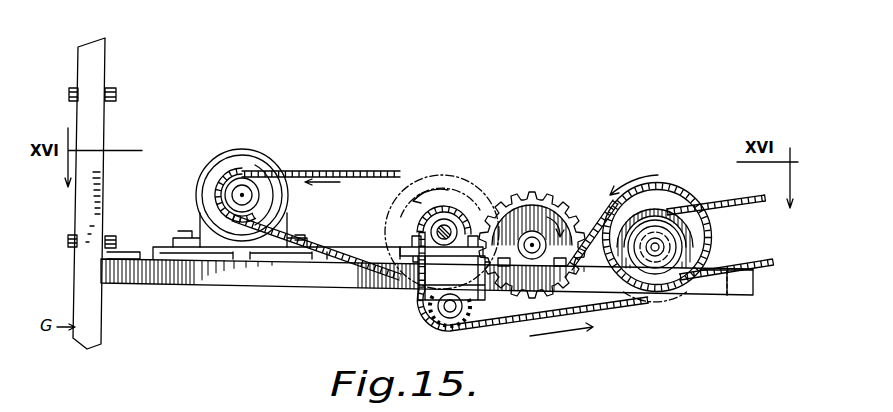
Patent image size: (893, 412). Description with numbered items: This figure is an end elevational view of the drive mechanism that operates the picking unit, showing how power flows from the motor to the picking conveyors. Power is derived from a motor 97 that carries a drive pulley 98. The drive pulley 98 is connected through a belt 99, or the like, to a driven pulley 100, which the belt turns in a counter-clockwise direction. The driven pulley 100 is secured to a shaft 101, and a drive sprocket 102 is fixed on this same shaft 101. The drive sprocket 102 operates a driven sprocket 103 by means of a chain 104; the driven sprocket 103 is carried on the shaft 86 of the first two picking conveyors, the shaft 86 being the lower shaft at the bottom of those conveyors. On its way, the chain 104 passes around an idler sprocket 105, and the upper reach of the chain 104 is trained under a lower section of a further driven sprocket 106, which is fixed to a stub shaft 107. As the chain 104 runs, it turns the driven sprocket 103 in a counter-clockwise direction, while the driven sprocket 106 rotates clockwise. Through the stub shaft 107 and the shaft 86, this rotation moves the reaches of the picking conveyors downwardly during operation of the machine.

The shaft 86 is at (660, 246).
The motor 97 is at (243, 153).
The drive pulley 98 is at (234, 192).
The belt 99 is at (347, 173).
The driven pulley 100 is at (445, 172).
The shaft 101 is at (430, 232).
The drive sprocket 102 is at (424, 213).
The driven sprocket 103 is at (667, 206).
The chain 104 is at (657, 303).
The idler sprocket 105 is at (466, 322).
The driven sprocket 106 is at (518, 210).
The stub shaft 107 is at (531, 245).